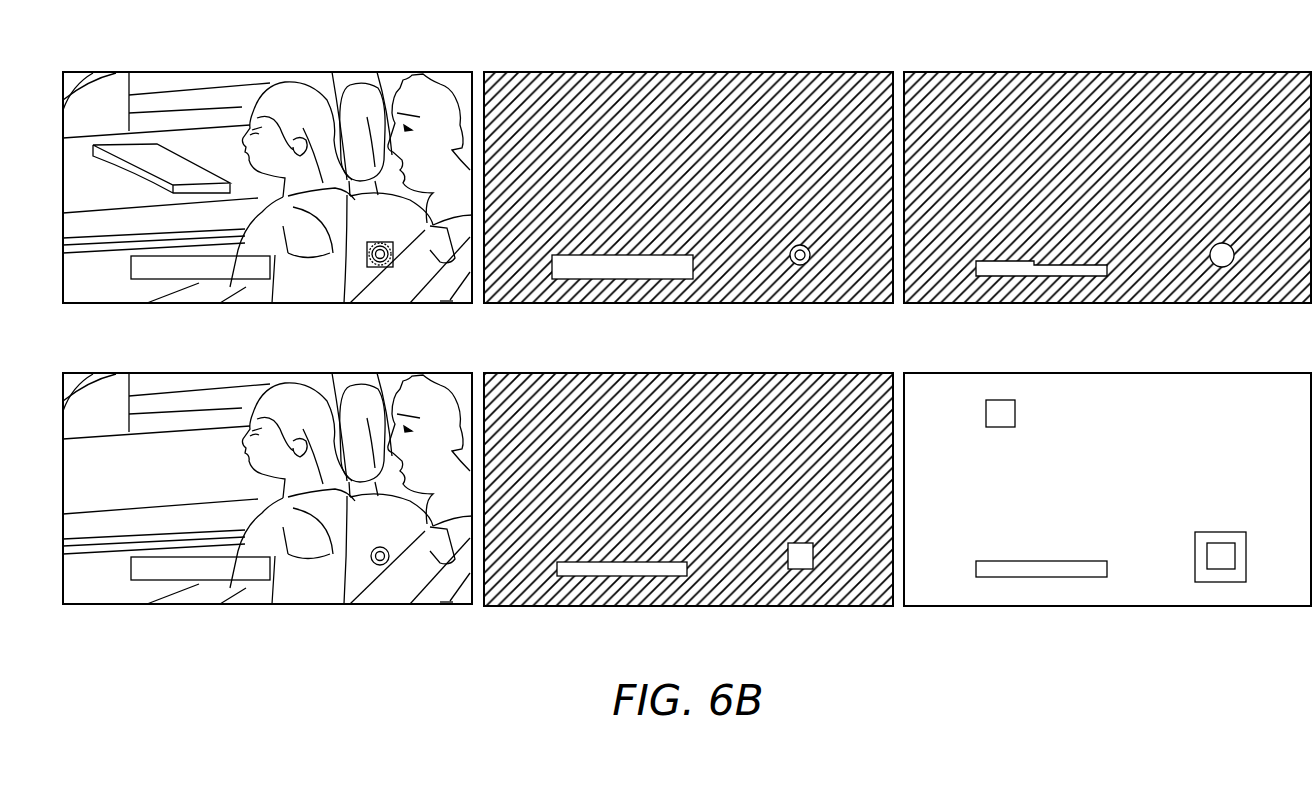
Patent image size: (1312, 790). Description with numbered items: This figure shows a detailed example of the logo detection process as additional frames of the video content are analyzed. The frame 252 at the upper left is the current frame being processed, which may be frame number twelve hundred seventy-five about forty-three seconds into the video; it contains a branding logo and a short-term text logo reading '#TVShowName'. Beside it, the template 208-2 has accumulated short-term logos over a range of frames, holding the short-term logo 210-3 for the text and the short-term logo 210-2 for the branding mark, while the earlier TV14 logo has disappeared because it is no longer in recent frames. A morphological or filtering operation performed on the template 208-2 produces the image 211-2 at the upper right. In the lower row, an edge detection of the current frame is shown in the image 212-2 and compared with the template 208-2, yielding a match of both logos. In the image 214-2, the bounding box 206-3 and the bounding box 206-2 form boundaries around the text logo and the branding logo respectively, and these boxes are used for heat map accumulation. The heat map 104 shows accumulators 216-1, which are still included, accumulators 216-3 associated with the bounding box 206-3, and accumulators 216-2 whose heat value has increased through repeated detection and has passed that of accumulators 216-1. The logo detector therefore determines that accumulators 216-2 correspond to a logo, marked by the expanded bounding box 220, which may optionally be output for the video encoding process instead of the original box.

The frame 252 is at (290, 72).
The image 212-2 is at (267, 373).
The template 208-2 is at (681, 72).
The short-term logo 210-3 is at (626, 280).
The short-term logo 210-2 is at (801, 266).
The image 211-2 is at (1109, 72).
The image 214-2 is at (720, 373).
The bounding box 206-3 is at (624, 577).
The bounding box 206-2 is at (802, 570).
The heat map 104 is at (1108, 373).
The accumulators 216-1 is at (1003, 400).
The accumulators 216-3 is at (1043, 578).
The accumulators 216-2 is at (1228, 570).
The expanded bounding box 220 is at (1195, 573).